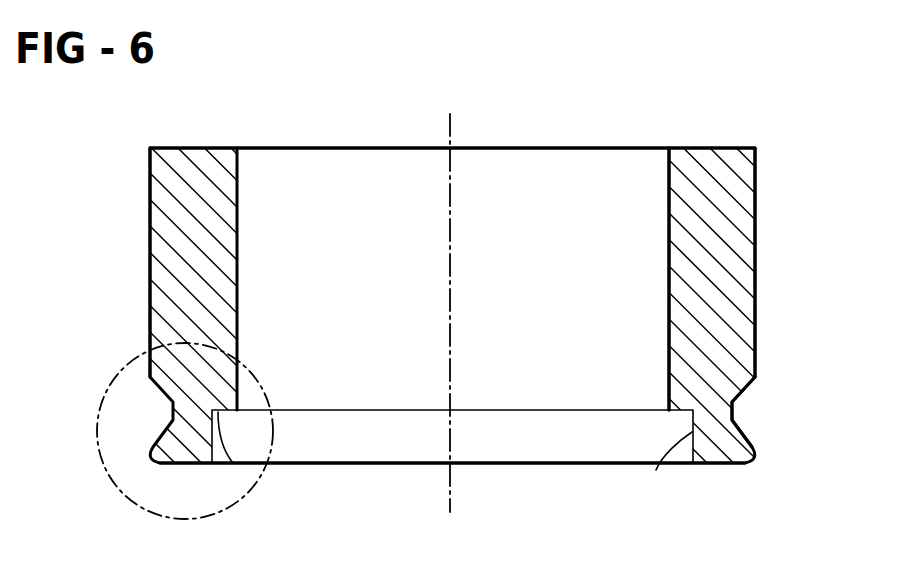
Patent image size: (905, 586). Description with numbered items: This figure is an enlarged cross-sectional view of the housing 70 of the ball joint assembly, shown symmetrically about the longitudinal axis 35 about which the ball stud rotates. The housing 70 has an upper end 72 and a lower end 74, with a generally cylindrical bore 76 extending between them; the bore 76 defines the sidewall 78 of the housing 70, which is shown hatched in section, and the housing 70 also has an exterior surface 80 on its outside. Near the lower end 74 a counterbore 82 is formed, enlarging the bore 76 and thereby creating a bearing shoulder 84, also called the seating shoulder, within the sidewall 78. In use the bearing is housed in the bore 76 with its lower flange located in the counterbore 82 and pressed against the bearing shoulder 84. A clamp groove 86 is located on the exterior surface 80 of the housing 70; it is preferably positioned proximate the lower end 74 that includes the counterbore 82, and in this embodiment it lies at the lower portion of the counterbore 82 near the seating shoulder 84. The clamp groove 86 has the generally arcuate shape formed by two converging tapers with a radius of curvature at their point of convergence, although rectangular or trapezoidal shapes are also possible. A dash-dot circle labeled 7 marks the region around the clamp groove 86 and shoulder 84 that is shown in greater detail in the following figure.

The housing 70 is at (759, 232).
The upper end 72 is at (702, 148).
The lower end 74 is at (710, 463).
The cylindrical bore 76 is at (669, 188).
The sidewall 78 is at (747, 323).
The exterior surface 80 is at (150, 268).
The counterbore 82 is at (656, 470).
The bearing shoulder 84 is at (233, 463).
The clamp groove 86 is at (718, 417).
The longitudinal axis 35 is at (450, 478).
The detail region of FIG. 7 is at (113, 487).